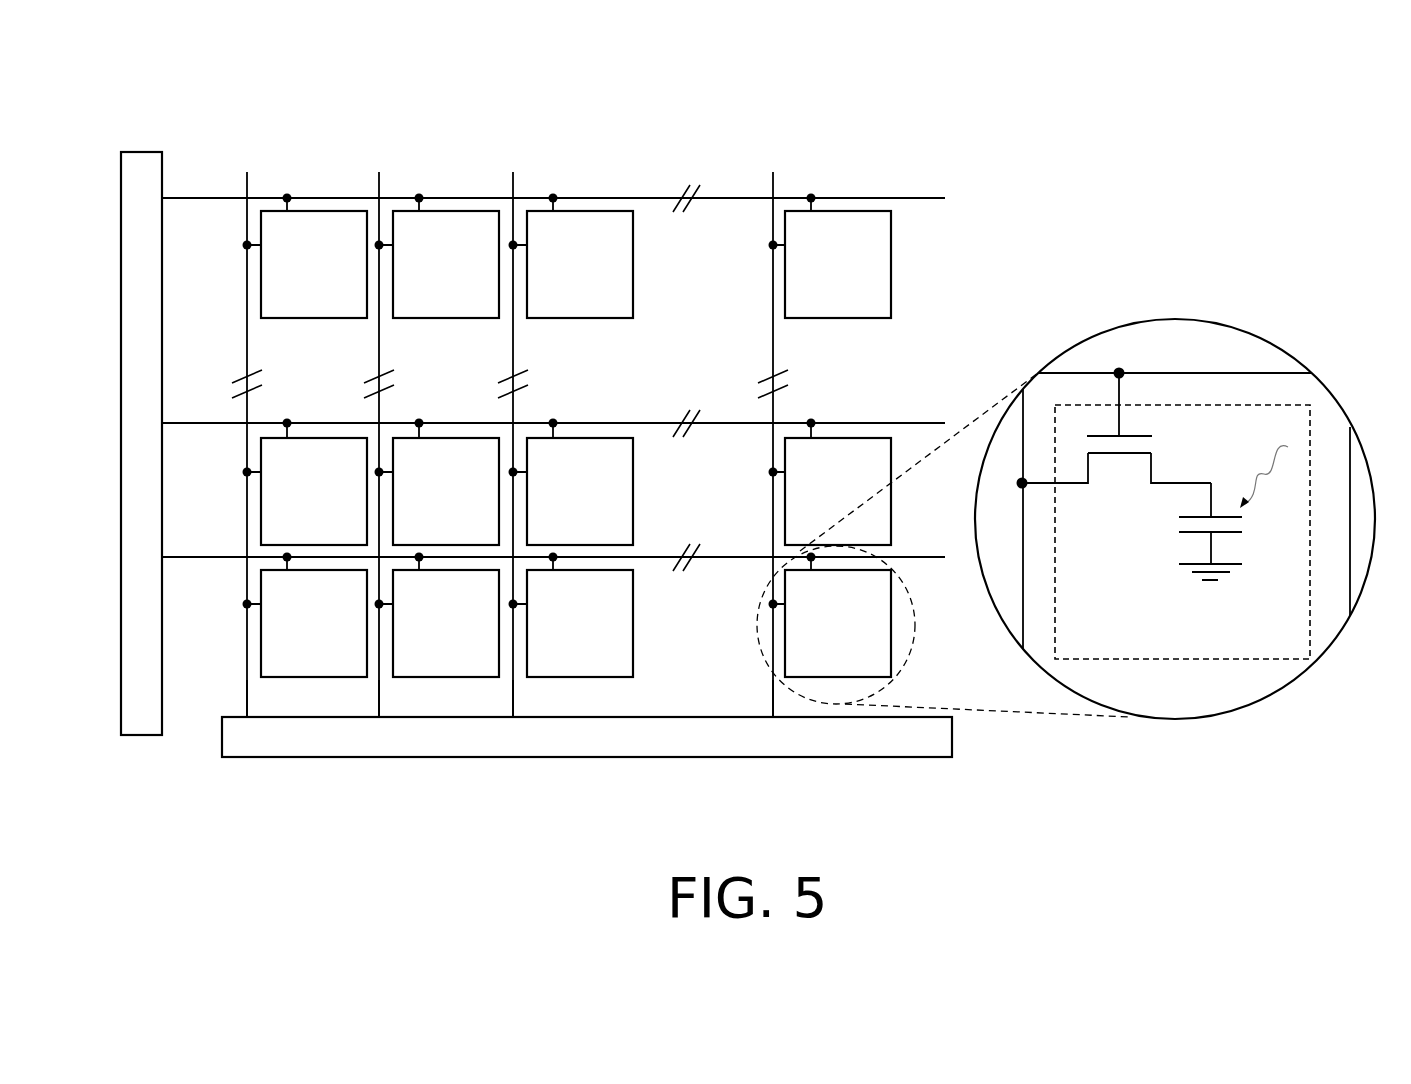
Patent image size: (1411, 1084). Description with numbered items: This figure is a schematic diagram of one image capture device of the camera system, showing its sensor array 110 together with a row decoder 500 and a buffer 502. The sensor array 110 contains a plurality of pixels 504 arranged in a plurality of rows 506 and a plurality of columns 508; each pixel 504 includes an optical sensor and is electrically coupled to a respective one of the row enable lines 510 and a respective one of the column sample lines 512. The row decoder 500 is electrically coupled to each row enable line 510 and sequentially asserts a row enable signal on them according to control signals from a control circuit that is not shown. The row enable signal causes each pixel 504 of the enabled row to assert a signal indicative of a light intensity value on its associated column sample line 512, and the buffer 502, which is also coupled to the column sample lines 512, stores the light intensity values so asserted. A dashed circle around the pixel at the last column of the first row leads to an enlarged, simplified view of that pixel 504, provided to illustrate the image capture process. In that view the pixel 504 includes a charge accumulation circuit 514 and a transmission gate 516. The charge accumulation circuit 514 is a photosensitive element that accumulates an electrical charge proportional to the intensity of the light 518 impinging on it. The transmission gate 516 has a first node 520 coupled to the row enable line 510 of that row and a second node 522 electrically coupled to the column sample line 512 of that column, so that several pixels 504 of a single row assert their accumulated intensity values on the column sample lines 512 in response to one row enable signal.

The sensor array 110 is at (1034, 118).
The row decoder 500 is at (140, 737).
The buffer 502 is at (335, 743).
The pixel 504 is at (1280, 305).
The row 506 is at (218, 281).
The column 508 is at (277, 163).
The row enable line 510 is at (920, 197).
The column sample line 512 is at (248, 703).
The charge accumulation circuit 514 is at (1198, 482).
The transmission gate 516 is at (1118, 456).
The light 518 is at (1267, 455).
The first node 520 is at (1122, 388).
The second node 522 is at (1063, 487).